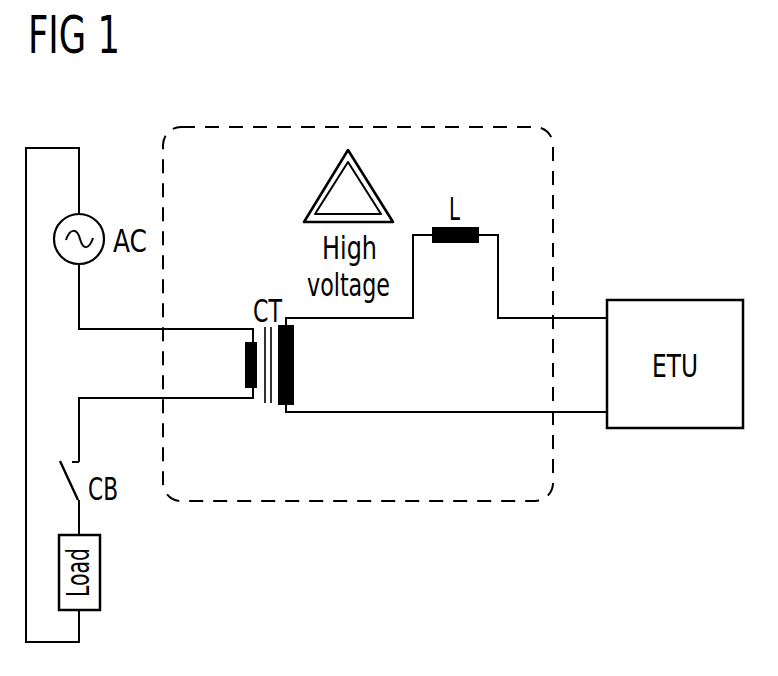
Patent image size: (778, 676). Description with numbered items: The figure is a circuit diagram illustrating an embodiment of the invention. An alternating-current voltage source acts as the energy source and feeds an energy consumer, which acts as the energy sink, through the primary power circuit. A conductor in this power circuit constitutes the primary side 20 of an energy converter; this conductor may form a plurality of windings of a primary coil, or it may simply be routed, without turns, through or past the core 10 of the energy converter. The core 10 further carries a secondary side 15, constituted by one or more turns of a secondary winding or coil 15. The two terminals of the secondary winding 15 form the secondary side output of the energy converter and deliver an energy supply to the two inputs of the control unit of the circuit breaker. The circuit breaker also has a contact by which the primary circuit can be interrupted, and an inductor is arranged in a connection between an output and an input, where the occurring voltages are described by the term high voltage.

The core 10 is at (268, 403).
The secondary winding 15 is at (298, 365).
The primary side 20 is at (244, 362).